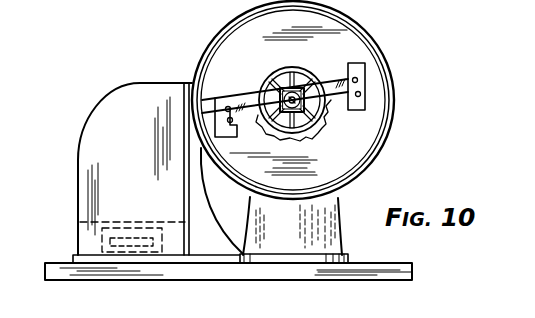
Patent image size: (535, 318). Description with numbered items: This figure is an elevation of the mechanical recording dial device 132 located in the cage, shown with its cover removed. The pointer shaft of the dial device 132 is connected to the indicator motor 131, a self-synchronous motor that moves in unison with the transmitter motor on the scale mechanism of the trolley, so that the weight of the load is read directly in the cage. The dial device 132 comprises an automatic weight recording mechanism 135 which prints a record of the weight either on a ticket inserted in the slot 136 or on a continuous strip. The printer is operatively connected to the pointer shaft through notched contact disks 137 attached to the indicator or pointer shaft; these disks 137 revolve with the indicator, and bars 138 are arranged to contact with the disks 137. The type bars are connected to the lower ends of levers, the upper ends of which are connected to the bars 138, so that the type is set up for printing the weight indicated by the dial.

The indicator motor 131 is at (296, 89).
The mechanical recording dial device 132 is at (199, 66).
The automatic weight recording mechanism 135 is at (98, 128).
The slot 136 is at (81, 223).
The notched contact disks 137 is at (313, 130).
The bars 138 is at (201, 100).